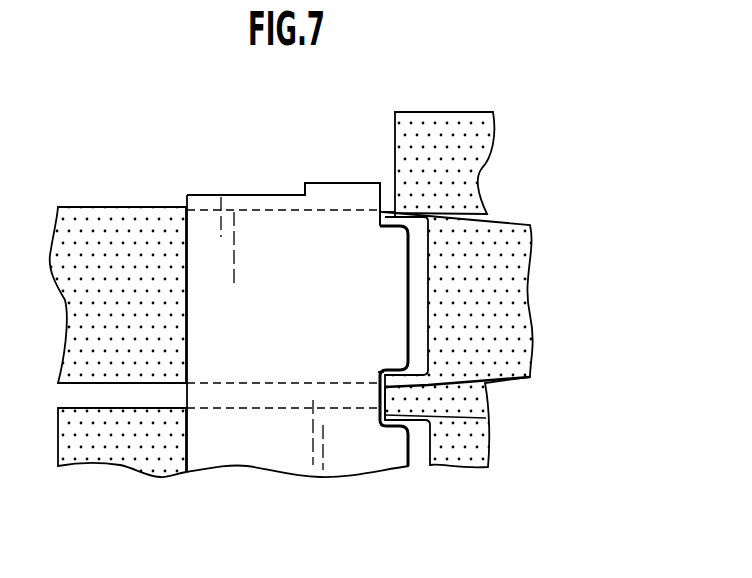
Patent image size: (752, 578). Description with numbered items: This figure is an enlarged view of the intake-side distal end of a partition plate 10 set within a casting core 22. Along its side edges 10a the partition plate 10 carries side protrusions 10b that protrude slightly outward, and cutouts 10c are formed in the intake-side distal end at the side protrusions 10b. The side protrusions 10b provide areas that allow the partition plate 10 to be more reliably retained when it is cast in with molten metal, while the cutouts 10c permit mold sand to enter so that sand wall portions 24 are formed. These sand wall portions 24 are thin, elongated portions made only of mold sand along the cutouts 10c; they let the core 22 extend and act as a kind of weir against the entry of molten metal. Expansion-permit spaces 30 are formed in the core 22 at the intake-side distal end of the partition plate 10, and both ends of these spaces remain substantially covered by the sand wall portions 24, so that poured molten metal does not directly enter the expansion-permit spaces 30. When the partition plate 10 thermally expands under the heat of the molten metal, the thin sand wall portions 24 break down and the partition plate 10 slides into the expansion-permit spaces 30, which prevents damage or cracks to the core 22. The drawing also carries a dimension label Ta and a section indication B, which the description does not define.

The partition plate 10 is at (298, 452).
The side edges 10a is at (248, 194).
The side protrusions 10b is at (337, 182).
The cutouts 10c is at (378, 212).
The core 22 is at (99, 196).
The sand wall portions 24 is at (385, 206).
The expansion-permit spaces 30 is at (442, 327).
The clearance Ta is at (425, 266).
The section line B is at (367, 307).